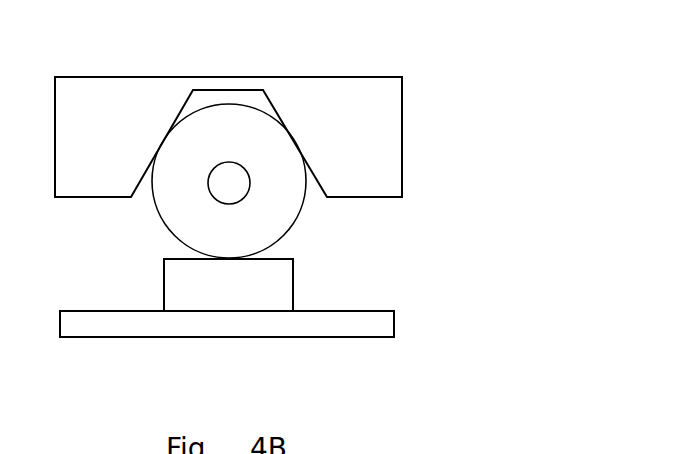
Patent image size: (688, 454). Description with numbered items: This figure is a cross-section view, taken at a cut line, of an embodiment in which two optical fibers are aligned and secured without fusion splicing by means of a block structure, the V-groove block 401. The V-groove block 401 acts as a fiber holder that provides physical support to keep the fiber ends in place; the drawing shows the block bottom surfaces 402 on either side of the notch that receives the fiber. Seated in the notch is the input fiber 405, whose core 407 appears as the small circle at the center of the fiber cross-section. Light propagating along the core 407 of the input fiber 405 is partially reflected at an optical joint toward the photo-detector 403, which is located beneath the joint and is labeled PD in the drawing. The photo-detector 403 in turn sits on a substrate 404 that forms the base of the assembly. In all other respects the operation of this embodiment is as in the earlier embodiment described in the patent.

The V-groove block 401 is at (397, 163).
The housing bottom surface 402 is at (88, 197).
The photo-detector 403 is at (293, 283).
The substrate 404 is at (395, 326).
The input optical fiber 405 is at (206, 104).
The core 407 is at (241, 161).